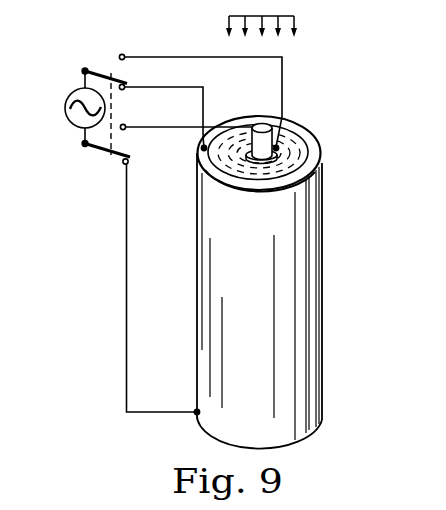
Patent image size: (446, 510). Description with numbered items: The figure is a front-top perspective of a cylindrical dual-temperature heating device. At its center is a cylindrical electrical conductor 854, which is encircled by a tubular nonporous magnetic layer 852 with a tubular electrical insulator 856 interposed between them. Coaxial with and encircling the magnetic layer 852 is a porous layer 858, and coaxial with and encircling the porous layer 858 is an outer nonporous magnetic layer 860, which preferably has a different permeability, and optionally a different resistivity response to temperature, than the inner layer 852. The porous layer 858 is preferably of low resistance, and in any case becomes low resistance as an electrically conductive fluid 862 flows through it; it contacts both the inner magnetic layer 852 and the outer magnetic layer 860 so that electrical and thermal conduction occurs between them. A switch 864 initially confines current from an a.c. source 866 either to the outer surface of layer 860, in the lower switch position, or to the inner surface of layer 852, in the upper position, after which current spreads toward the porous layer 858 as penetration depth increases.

The tubular nonporous magnetic layer 852 is at (281, 156).
The cylindrical electrical conductor 854 is at (260, 124).
The tubular electrical insulator 856 is at (279, 151).
The porous layer 858 is at (298, 166).
The outer nonporous magnetic layer 860 is at (291, 188).
The electrically conductive fluid 862 is at (294, 16).
The switch 864 is at (103, 70).
The a.c. source 866 is at (80, 130).